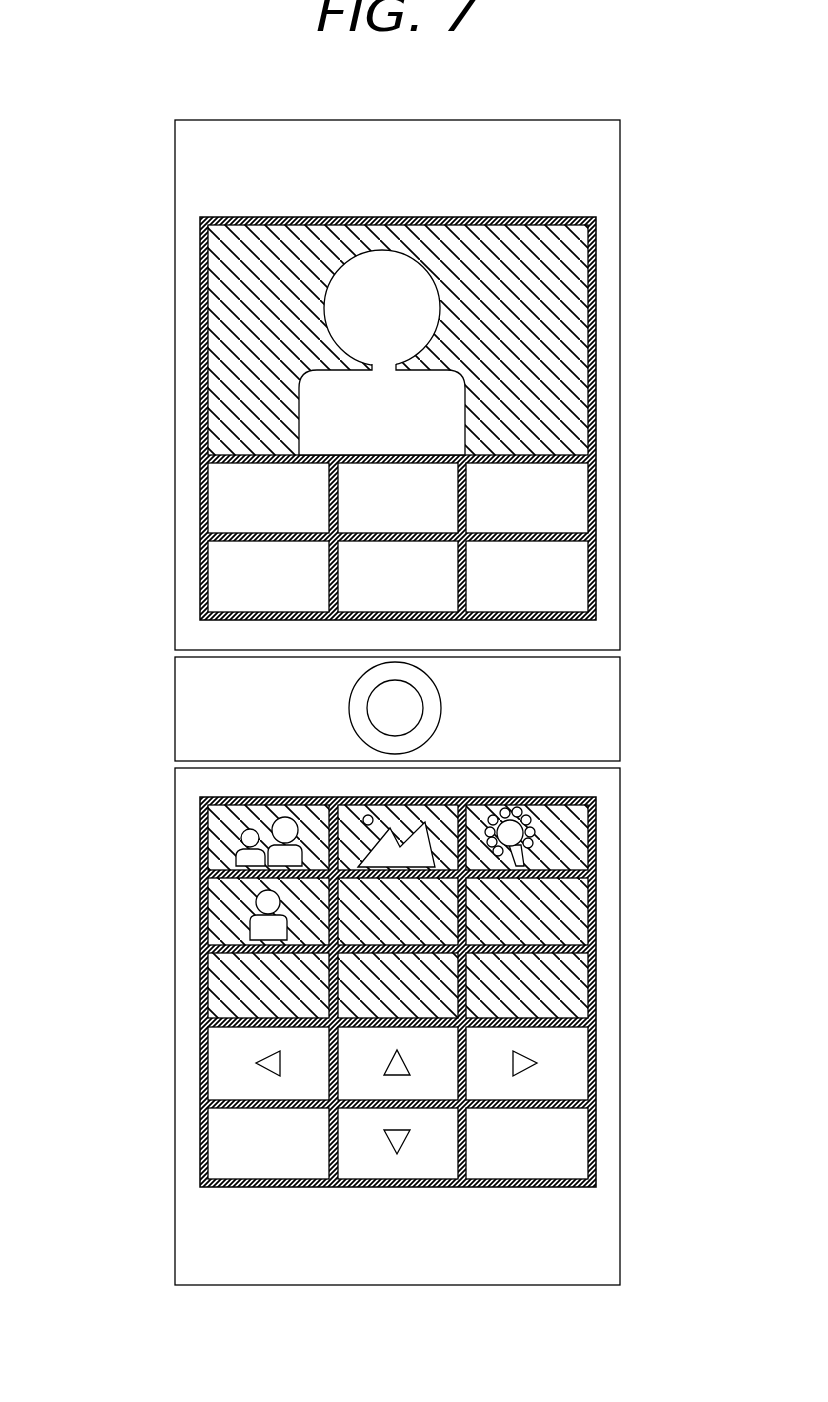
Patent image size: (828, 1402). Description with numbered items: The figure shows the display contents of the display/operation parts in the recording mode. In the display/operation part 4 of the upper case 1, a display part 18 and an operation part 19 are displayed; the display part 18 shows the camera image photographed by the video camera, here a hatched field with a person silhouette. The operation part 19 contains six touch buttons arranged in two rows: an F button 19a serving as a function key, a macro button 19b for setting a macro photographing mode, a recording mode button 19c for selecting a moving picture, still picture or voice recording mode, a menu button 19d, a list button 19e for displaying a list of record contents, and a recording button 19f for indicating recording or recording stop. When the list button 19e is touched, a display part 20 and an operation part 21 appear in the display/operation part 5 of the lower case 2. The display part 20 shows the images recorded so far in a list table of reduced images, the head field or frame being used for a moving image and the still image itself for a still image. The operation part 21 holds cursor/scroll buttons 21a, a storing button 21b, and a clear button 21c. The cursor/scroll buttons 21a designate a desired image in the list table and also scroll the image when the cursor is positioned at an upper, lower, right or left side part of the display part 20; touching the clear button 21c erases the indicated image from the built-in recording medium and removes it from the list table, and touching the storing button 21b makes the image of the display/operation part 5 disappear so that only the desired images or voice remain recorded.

The upper case 1 is at (587, 158).
The lower case 2 is at (593, 1237).
The display/operation part 4 is at (593, 377).
The display/operation part 5 is at (597, 915).
The display part 18 is at (575, 282).
The operation part 19 is at (395, 545).
The F button 19a is at (215, 510).
The macro button 19b is at (357, 476).
The recording mode button 19c is at (583, 533).
The menu button 19d is at (215, 583).
The list button 19e is at (370, 600).
The recording button 19f is at (578, 600).
The display part 20 is at (155, 810).
The operation part 21 is at (397, 1130).
The cursor/scroll buttons 21a is at (312, 1047).
The storing button 21b is at (257, 1167).
The clear button 21c is at (573, 1142).